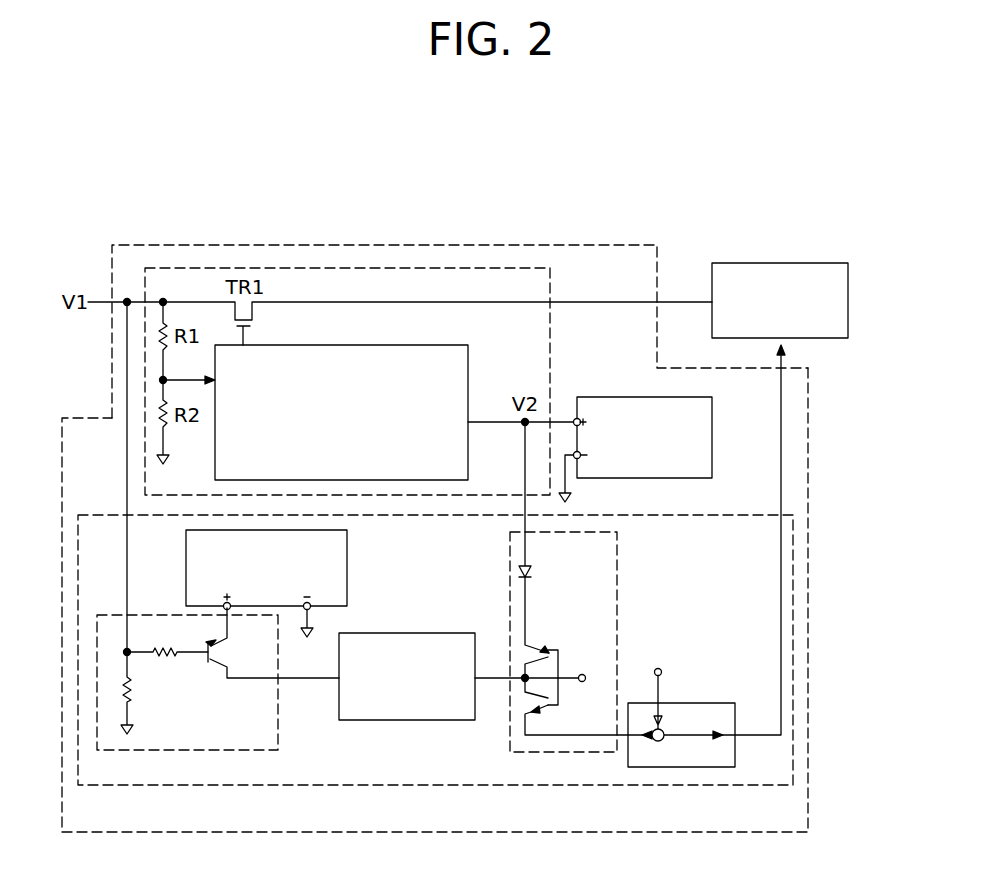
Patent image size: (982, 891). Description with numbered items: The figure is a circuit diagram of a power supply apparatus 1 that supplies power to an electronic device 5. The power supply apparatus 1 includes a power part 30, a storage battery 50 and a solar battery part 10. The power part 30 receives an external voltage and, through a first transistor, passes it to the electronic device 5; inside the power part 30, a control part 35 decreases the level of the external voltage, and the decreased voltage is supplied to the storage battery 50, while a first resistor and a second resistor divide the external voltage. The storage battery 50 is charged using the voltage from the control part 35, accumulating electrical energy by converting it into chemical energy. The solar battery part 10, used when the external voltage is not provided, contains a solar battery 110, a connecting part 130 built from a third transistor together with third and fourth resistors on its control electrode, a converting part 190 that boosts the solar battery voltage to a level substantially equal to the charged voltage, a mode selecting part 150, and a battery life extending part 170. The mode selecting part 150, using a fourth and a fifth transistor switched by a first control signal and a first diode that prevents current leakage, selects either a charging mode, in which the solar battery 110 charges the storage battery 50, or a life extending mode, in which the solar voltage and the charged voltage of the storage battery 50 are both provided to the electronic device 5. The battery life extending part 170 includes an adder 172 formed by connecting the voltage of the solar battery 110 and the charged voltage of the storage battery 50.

The power supply apparatus 1 is at (510, 245).
The electronic device 5 is at (783, 263).
The solar battery part 10 is at (793, 665).
The power part 30 is at (323, 268).
The control part 35 is at (470, 357).
The storage battery 50 is at (712, 438).
The solar battery 110 is at (347, 597).
The connecting part 130 is at (279, 745).
The mode selecting part 150 is at (617, 590).
The battery life extending part 170 is at (716, 703).
The adder 172 is at (657, 742).
The converting part 190 is at (407, 720).